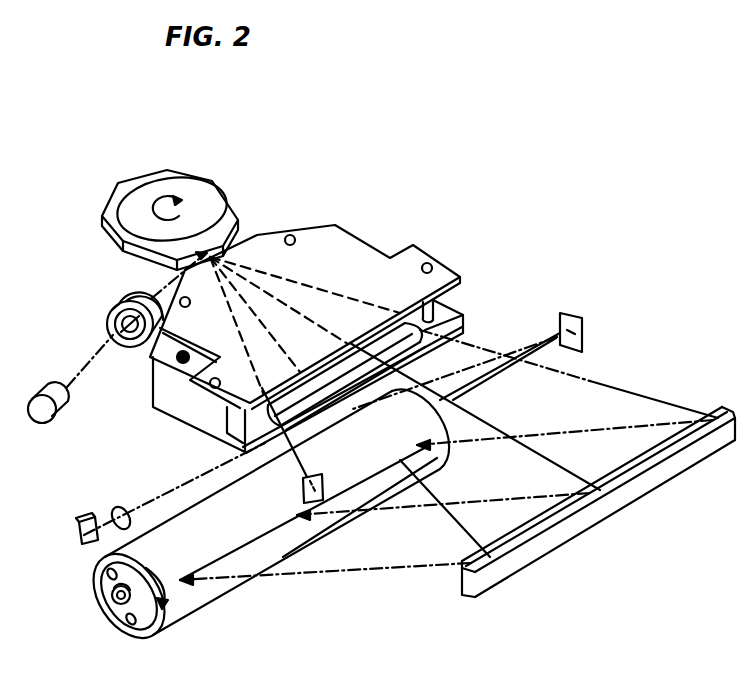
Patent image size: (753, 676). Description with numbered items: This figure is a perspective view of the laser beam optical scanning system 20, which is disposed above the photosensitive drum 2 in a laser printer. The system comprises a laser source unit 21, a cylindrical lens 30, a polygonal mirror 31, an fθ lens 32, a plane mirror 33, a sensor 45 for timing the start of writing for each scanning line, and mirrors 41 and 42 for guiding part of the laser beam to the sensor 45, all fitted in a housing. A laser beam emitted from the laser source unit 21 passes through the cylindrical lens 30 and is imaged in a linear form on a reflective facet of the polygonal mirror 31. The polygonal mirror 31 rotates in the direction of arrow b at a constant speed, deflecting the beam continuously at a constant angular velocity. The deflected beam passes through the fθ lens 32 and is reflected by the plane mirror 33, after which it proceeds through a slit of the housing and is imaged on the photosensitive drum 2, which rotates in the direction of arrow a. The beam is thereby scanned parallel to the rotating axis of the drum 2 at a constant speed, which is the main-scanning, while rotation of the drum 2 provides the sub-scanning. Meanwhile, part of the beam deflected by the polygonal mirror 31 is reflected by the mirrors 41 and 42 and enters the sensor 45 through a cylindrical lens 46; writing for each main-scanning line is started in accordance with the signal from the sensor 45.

The photosensitive drum 2 is at (214, 597).
The laser beam optical scanning system 20 is at (362, 142).
The laser source unit 21 is at (42, 380).
The cylindrical lens 30 is at (117, 294).
The polygonal mirror 31 is at (183, 170).
The fθ lens 32 is at (378, 235).
The plane mirror 33 is at (614, 486).
The mirror 41 is at (302, 496).
The mirror 42 is at (565, 312).
The sensor 45 is at (72, 520).
The cylindrical lens 46 is at (120, 506).